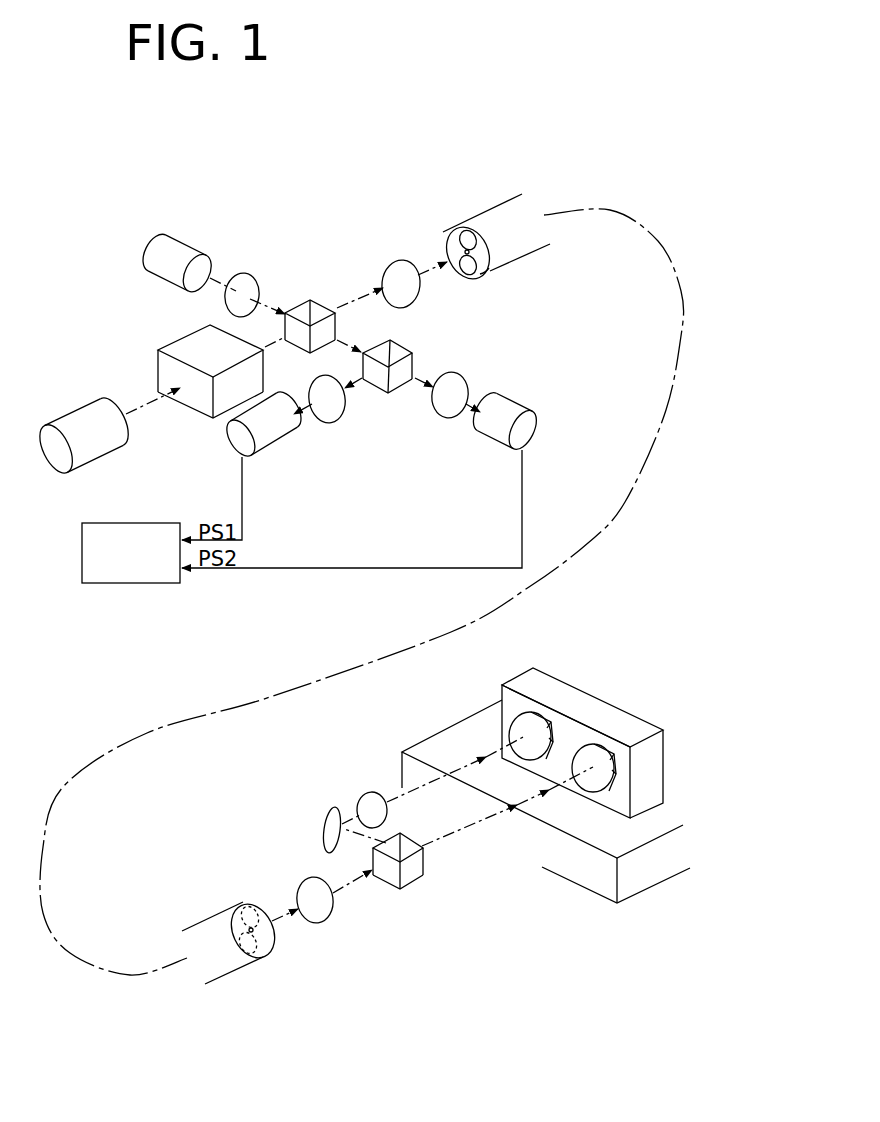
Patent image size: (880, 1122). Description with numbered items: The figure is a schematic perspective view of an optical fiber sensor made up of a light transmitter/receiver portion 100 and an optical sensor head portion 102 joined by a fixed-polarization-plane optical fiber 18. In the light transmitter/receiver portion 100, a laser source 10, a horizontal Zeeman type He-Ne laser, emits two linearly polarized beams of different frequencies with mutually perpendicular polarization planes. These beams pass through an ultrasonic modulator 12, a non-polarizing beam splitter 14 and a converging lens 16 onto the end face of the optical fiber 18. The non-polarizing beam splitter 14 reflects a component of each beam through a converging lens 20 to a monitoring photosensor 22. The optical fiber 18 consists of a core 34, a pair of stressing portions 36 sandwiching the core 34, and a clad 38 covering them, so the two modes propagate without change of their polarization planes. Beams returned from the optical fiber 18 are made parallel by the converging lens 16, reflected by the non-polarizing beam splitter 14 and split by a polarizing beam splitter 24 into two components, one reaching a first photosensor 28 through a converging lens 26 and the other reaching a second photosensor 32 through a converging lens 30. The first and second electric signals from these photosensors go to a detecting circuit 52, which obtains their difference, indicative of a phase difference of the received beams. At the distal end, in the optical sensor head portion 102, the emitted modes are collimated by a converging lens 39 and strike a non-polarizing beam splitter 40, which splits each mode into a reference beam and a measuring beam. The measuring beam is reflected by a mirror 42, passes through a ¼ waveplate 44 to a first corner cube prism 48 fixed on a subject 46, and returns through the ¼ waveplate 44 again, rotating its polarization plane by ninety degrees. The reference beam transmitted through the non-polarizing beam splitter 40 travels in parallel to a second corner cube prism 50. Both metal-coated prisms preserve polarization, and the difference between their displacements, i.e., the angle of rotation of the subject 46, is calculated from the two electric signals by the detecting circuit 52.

The laser source 10 is at (70, 418).
The ultrasonic modulator 12 is at (184, 344).
The non-polarizing beam splitter 14 is at (312, 306).
The converging lens 16 is at (390, 276).
The optical fiber 18 is at (504, 212).
The converging lens 20 is at (251, 284).
The monitoring photosensor 22 is at (181, 252).
The polarizing beam splitter 24 is at (398, 350).
The converging lens 26 is at (337, 412).
The first photosensor 28 is at (274, 434).
The converging lens 30 is at (445, 408).
The second photosensor 32 is at (491, 426).
The core 34 is at (464, 251).
The stressing portions 36 is at (460, 234).
The clad 38 is at (486, 273).
The converging lens 39 is at (305, 887).
The non-polarizing beam splitter 40 is at (405, 873).
The mirror 42 is at (328, 820).
The ¼ waveplate 44 is at (367, 806).
The subject 46 is at (576, 696).
The first corner cube prism 48 is at (516, 731).
The second corner cube prism 50 is at (594, 760).
The detecting circuit 52 is at (134, 580).
The light transmitter/receiver portion 100 is at (272, 190).
The optical sensor head portion 102 is at (412, 943).